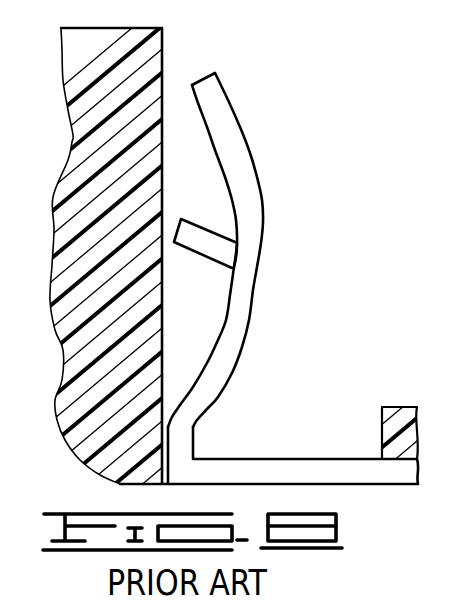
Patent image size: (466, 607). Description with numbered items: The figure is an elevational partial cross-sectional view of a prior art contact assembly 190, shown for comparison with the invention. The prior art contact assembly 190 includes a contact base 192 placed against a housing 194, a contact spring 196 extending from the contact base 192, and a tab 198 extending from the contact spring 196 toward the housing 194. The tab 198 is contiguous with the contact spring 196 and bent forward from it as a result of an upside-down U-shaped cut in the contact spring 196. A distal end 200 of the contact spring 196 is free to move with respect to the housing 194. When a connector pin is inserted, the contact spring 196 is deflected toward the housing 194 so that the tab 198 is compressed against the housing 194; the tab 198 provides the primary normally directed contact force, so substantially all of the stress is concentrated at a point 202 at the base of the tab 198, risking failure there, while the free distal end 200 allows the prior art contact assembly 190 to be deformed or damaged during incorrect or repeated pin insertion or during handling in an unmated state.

The prior art contact assembly 190 is at (290, 249).
The contact base 192 is at (177, 444).
The housing 194 is at (104, 157).
The contact spring 196 is at (250, 258).
The tab 198 is at (200, 242).
The distal end 200 is at (207, 87).
The point 202 is at (234, 242).